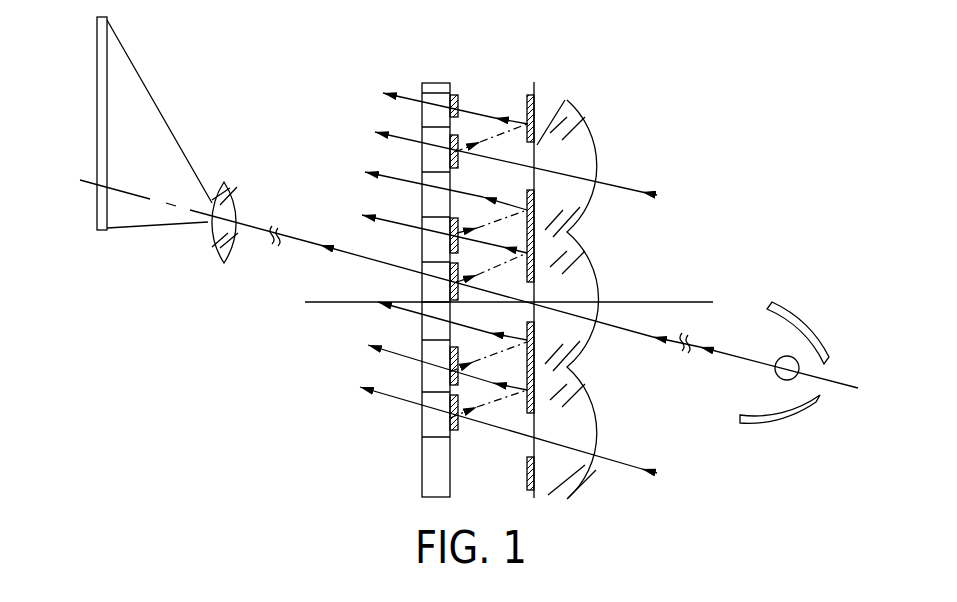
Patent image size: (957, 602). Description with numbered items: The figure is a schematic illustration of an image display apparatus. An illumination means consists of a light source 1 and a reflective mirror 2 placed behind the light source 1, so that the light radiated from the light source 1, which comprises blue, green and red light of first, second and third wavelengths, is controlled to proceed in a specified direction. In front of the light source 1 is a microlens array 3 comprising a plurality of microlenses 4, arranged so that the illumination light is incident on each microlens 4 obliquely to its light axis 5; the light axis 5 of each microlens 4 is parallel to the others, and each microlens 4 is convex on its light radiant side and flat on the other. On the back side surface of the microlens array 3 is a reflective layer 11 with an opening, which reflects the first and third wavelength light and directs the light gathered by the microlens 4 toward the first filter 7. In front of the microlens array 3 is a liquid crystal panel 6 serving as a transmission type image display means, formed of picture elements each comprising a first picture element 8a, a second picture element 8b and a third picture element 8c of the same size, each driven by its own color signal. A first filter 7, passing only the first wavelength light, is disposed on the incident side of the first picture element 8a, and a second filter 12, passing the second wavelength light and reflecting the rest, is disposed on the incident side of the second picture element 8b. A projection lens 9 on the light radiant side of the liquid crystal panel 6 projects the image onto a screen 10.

The light source 1 is at (776, 372).
The reflective mirror 2 is at (775, 418).
The microlens array 3 is at (591, 290).
The microlens 4 is at (597, 150).
The light axis 5 is at (713, 302).
The liquid crystal panel 6 is at (432, 76).
The first filter 7 is at (466, 134).
The first picture element 8a is at (425, 152).
The second picture element 8b is at (425, 111).
The third picture element 8c is at (428, 197).
The projection lens 9 is at (230, 186).
The screen 10 is at (108, 222).
The reflective layer 11 is at (538, 95).
The second filter 12 is at (460, 100).